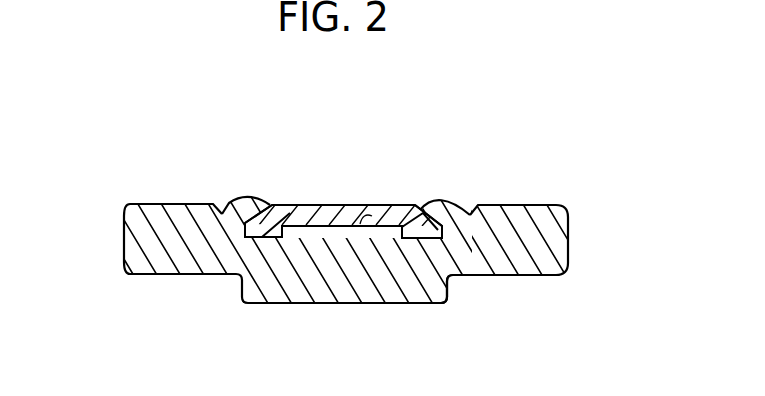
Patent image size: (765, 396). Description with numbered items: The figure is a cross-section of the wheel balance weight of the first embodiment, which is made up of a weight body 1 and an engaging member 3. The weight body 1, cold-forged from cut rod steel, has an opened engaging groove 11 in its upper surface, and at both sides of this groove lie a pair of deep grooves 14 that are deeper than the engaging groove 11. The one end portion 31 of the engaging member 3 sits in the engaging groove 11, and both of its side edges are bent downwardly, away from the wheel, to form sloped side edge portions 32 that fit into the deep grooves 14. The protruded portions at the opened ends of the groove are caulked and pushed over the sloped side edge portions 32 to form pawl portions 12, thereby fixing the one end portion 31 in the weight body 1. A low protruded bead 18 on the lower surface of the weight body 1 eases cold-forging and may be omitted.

The weight body 1 is at (551, 225).
The engaging member 3 is at (327, 153).
The engaging groove 11 is at (364, 223).
The pawl portions 12 is at (238, 199).
The deep grooves 14 is at (448, 278).
The protruded bead 18 is at (330, 305).
The one end portion 31 is at (332, 203).
The sloped side edge portions 32 is at (273, 204).